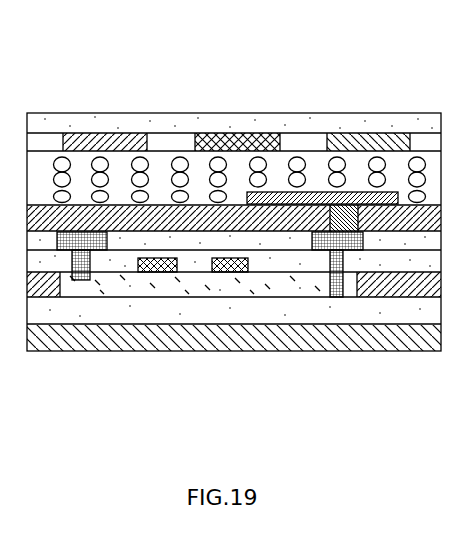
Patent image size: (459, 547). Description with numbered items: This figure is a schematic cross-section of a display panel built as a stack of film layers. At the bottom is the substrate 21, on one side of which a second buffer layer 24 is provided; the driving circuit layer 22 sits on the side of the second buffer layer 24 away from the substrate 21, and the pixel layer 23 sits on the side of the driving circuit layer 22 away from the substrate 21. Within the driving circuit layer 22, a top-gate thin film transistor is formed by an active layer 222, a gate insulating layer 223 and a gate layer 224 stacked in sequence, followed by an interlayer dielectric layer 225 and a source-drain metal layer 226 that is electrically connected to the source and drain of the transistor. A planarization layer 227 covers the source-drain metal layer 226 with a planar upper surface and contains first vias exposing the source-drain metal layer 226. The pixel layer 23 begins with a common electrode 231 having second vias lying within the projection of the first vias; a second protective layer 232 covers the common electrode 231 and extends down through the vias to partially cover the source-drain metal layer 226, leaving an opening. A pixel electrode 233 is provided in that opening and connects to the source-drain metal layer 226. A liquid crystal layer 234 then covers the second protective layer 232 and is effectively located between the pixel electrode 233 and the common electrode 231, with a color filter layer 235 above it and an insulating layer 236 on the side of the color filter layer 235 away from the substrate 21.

The substrate 21 is at (66, 351).
The driving circuit layer 22 is at (165, 390).
The pixel layer 23 is at (30, 70).
The second buffer layer 24 is at (99, 308).
The active layer 222 is at (155, 298).
The gate insulating layer 223 is at (201, 280).
The gate layer 224 is at (255, 270).
The interlayer dielectric layer 225 is at (305, 251).
The source-drain metal layer 226 is at (340, 300).
The planarization layer 227 is at (394, 252).
The common electrode 231 is at (398, 204).
The second protective layer 232 is at (243, 195).
The pixel electrode 233 is at (318, 193).
The liquid crystal layer 234 is at (50, 150).
The color filter layer 235 is at (109, 145).
The insulating layer 236 is at (163, 133).